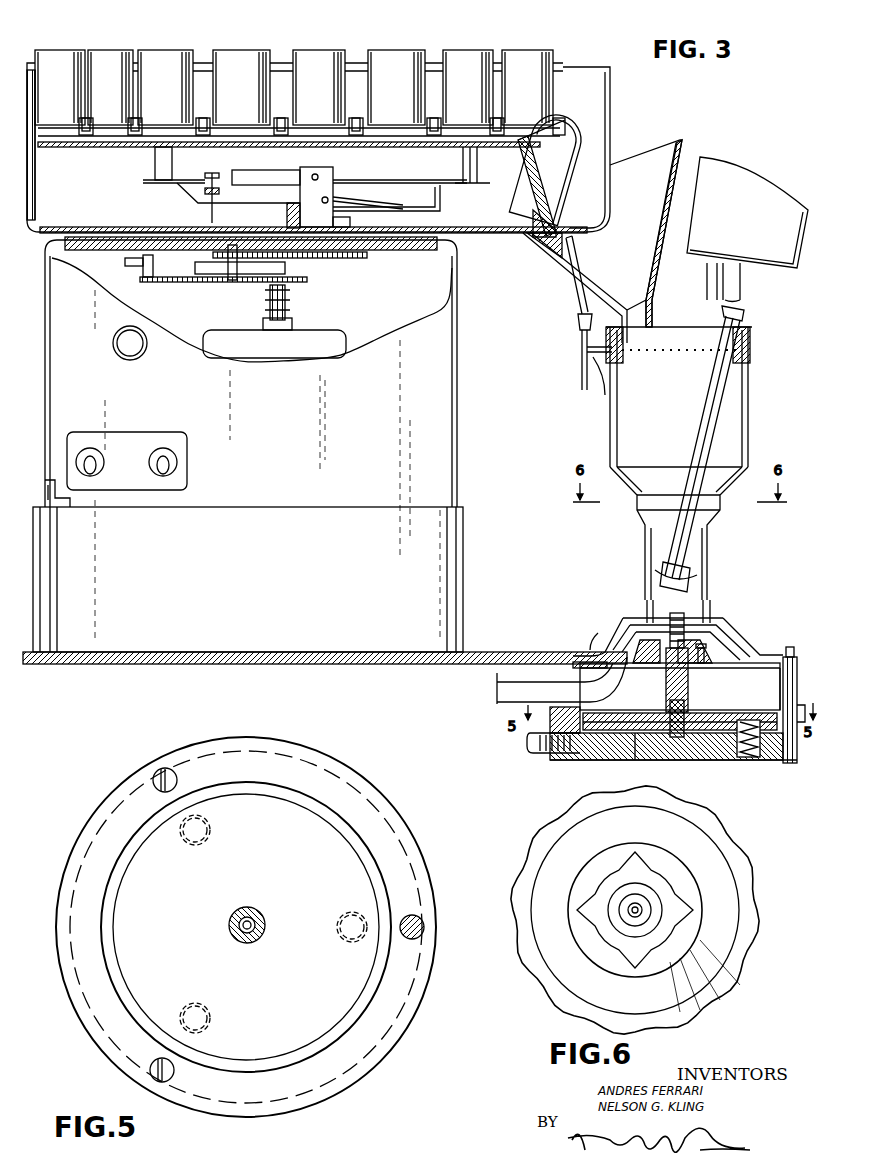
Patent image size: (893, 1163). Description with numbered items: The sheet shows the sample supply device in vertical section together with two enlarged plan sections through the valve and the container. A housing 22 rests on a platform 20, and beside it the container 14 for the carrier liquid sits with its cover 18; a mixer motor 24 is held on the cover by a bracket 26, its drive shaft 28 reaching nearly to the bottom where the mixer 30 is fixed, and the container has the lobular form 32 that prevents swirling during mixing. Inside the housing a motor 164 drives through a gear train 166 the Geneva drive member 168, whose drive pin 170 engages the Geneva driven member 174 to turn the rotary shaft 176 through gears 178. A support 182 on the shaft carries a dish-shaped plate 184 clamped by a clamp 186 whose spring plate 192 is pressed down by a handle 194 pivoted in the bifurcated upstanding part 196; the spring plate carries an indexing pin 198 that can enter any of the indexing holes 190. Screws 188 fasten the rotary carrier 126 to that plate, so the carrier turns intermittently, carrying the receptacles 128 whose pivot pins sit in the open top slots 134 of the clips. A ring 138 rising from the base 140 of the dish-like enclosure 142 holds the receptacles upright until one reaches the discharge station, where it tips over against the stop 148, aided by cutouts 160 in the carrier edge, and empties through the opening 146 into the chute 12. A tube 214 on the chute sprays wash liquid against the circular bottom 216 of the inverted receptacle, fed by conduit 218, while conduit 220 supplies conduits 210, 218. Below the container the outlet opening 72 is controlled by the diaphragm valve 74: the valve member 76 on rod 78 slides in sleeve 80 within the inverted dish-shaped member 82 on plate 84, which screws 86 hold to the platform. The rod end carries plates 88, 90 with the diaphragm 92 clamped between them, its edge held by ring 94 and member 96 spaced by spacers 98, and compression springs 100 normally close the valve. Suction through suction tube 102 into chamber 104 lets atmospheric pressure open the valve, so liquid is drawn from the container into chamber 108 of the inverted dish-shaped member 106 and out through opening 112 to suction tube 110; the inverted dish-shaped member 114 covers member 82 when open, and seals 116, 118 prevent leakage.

In FIG. 3, the chute 12 is at (562, 265).
In FIG. 3, the container 14 is at (752, 387).
In FIG. 6, the container 14 is at (700, 930).
In FIG. 3, the cover 18 is at (744, 313).
In FIG. 3, the platform 20 is at (490, 652).
In FIG. 3, the housing 22 is at (458, 406).
In FIG. 3, the mixer motor 24 is at (706, 160).
In FIG. 3, the bracket 26 is at (706, 290).
In FIG. 3, the drive shaft 28 is at (712, 401).
In FIG. 3, the mixer 30 is at (694, 576).
In FIG. 3, the lobular form 32 is at (722, 506).
In FIG. 6, the lobular form 32 is at (678, 905).
In FIG. 3, the outlet opening 72 is at (652, 612).
In FIG. 3, the suction-operated diaphragm valve 74 is at (726, 762).
In FIG. 3, the valve member 76 is at (706, 636).
In FIG. 3, the rod 78 is at (689, 685).
In FIG. 5, the rod 78 is at (260, 918).
In FIG. 3, the sleeve 80 is at (689, 701).
In FIG. 5, the sleeve 80 is at (262, 932).
In FIG. 3, the inverted dish-shaped member 82 is at (706, 652).
In FIG. 3, the plate 84 is at (748, 669).
In FIG. 3, the screws 86 is at (791, 647).
In FIG. 5, the screws 86 is at (410, 940).
In FIG. 3, the plate 88 is at (605, 713).
In FIG. 3, the plate 90 is at (636, 745).
In FIG. 3, the diaphragm 92 is at (650, 718).
In FIG. 3, the ring 94 is at (799, 680).
In FIG. 5, the ring 94 is at (437, 955).
In FIG. 3, the member 96 is at (680, 760).
In FIG. 3, the spacers 98 is at (779, 700).
In FIG. 5, the spacers 98 is at (424, 929).
In FIG. 3, the compression springs 100 is at (768, 752).
In FIG. 5, the compression springs 100 is at (212, 832).
In FIG. 3, the suction tube 102 is at (546, 752).
In FIG. 3, the chamber 104 is at (592, 748).
In FIG. 3, the inverted dish-shaped member 106 is at (738, 628).
In FIG. 6, the inverted dish-shaped member 106 is at (722, 962).
In FIG. 3, the chamber 108 is at (622, 636).
In FIG. 3, the suction tube 110 is at (497, 681).
In FIG. 3, the opening 112 is at (600, 655).
In FIG. 3, the inverted dish-shaped member 114 is at (600, 635).
In FIG. 3, the seal 116 is at (720, 632).
In FIG. 3, the seal 118 is at (652, 663).
In FIG. 3, the rotary carrier 126 is at (108, 148).
In FIG. 3, the receptacles 128 is at (538, 50).
In FIG. 3, the open top slots 134 is at (434, 128).
In FIG. 3, the ring 138 is at (612, 104).
In FIG. 3, the base 140 is at (455, 238).
In FIG. 3, the dish-like enclosure 142 is at (614, 136).
In FIG. 3, the opening 146 is at (594, 234).
In FIG. 3, the stop 148 is at (550, 258).
In FIG. 3, the cutouts 160 is at (480, 176).
In FIG. 3, the motor 164 is at (344, 340).
In FIG. 3, the gear train 166 is at (200, 290).
In FIG. 3, the Geneva drive member 168 is at (143, 262).
In FIG. 3, the drive pin 170 is at (143, 269).
In FIG. 3, the Geneva driven member 174 is at (218, 283).
In FIG. 3, the rotary shaft 176 is at (332, 258).
In FIG. 3, the gears 178 is at (285, 264).
In FIG. 3, the support 182 is at (285, 220).
In FIG. 3, the dish-shaped plate 184 is at (444, 200).
In FIG. 3, the clamp 186 is at (372, 192).
In FIG. 3, the screws 188 is at (178, 186).
In FIG. 3, the indexing holes 190 is at (350, 223).
In FIG. 3, the spring plate 192 is at (378, 201).
In FIG. 3, the handle 194 is at (242, 170).
In FIG. 3, the bifurcated upstanding part 196 is at (335, 176).
In FIG. 3, the indexing pin 198 is at (205, 213).
In FIG. 3, the conduit 210 is at (600, 385).
In FIG. 3, the tube 214 is at (578, 302).
In FIG. 3, the bottom 216 is at (565, 147).
In FIG. 3, the conduit 218 is at (578, 333).
In FIG. 3, the conduit 220 is at (580, 368).